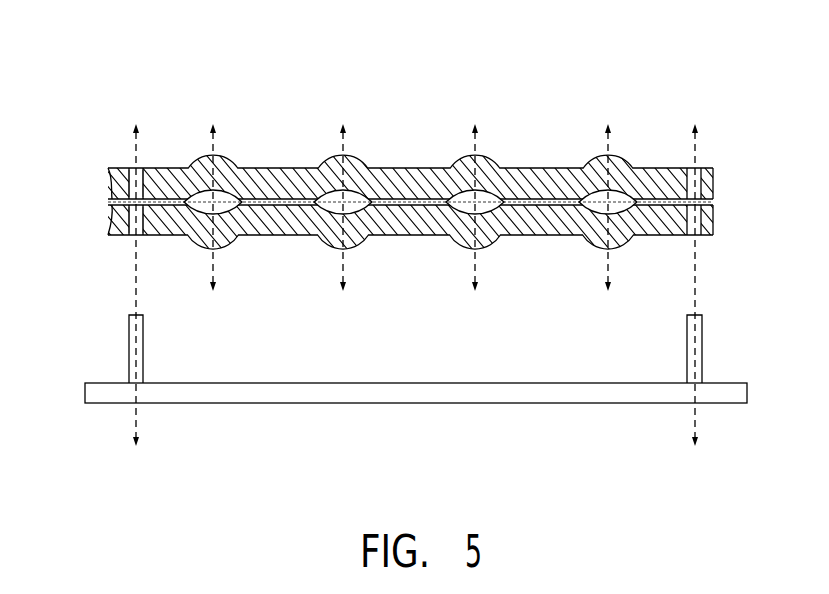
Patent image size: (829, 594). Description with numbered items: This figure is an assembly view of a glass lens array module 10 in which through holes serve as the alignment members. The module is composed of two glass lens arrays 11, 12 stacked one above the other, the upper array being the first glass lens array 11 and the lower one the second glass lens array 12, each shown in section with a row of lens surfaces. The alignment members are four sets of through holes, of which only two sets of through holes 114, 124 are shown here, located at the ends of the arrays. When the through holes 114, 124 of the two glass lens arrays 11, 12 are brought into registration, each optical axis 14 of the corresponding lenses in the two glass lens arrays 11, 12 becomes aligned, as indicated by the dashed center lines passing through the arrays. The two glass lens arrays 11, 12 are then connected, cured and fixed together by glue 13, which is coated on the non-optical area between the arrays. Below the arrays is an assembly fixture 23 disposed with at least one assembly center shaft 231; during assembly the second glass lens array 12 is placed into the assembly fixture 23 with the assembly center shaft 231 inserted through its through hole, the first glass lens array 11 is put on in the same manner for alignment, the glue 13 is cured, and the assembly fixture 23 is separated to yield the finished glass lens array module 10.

The glass lens array module 10 is at (122, 76).
The glass lens array 11 is at (713, 178).
The glass lens array 12 is at (713, 225).
The glue 13 is at (168, 204).
The optical axis 14 is at (430, 277).
The through hole 114 is at (112, 180).
The through hole 124 is at (112, 229).
The assembly fixture 23 is at (553, 394).
The assembly center shaft 231 is at (132, 333).